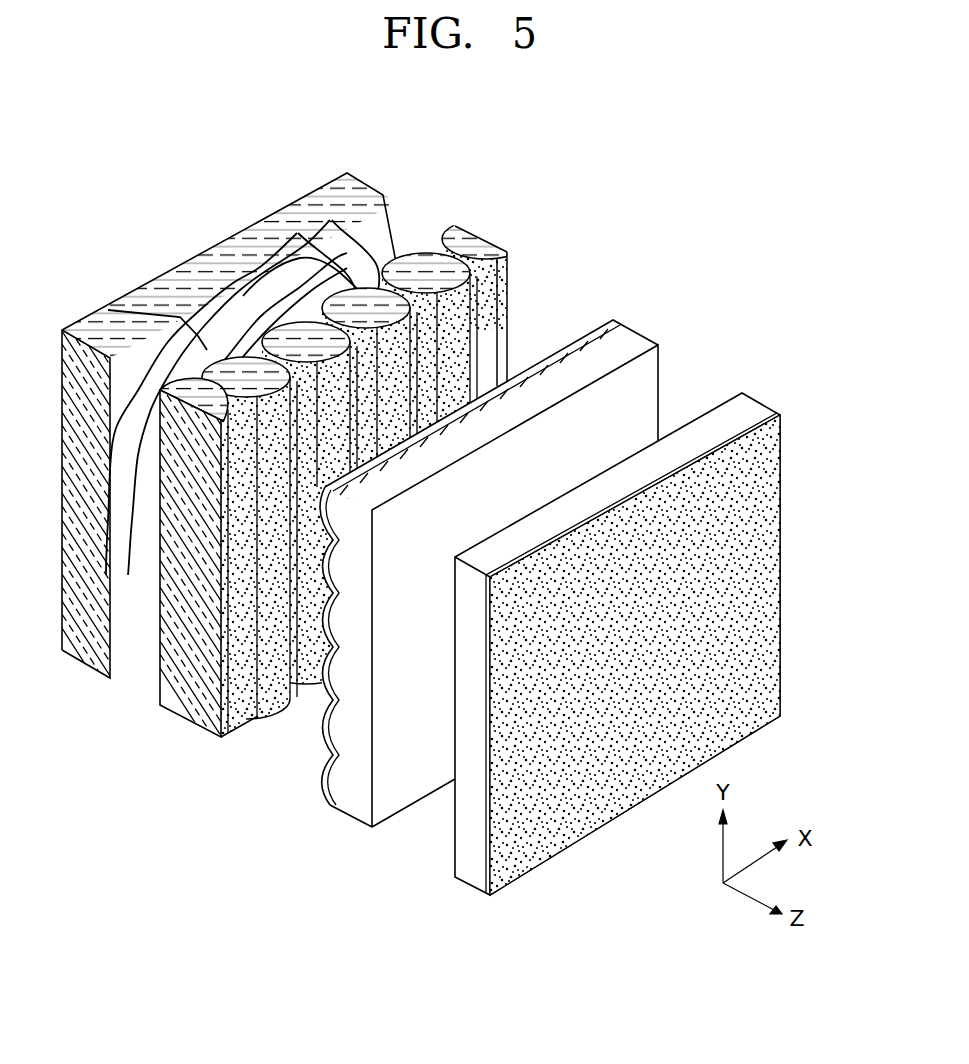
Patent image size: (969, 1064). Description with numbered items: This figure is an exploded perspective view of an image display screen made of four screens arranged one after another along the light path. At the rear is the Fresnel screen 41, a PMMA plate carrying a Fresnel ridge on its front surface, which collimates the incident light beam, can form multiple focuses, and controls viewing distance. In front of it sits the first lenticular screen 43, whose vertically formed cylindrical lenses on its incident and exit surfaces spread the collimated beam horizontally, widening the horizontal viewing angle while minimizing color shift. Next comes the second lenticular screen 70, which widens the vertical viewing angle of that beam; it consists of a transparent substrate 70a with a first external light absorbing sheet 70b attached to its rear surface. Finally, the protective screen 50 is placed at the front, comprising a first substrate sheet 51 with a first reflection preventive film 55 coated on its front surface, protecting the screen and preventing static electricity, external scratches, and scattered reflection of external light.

The Fresnel screen 41 is at (363, 192).
The first lenticular screen 43 is at (477, 242).
The second lenticular screen 70 is at (485, 571).
The transparent substrate 70a is at (350, 802).
The first external light absorbing sheet 70b is at (318, 772).
The protective screen 50 is at (656, 612).
The first substrate sheet 51 is at (755, 405).
The first reflection preventive film 55 is at (772, 467).